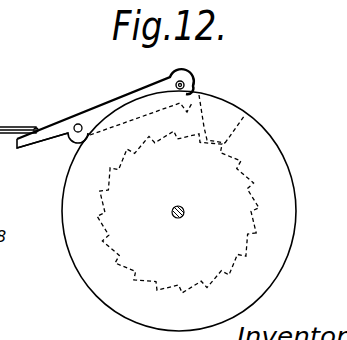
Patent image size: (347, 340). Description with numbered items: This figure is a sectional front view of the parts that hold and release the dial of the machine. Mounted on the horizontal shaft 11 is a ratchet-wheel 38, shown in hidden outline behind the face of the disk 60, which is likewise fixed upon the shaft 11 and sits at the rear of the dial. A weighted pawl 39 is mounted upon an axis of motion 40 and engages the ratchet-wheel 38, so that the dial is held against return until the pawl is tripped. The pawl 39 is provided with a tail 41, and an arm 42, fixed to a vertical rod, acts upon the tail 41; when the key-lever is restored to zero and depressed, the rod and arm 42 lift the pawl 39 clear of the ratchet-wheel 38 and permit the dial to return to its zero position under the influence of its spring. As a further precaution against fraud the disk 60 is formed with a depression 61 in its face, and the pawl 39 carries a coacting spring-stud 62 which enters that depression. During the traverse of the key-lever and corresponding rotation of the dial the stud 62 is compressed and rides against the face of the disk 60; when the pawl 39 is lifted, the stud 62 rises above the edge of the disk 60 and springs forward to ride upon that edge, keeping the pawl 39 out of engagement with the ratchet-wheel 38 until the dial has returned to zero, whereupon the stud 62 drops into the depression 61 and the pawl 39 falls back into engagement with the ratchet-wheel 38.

The horizontal shaft 11 is at (186, 212).
The ratchet-wheel 38 is at (253, 178).
The weighted pawl 39 is at (153, 85).
The axis of motion 40 is at (78, 124).
The tail 41 is at (25, 152).
The arm 42 is at (20, 126).
The disk 60 is at (241, 133).
The depression 61 is at (208, 110).
The spring-stud 62 is at (194, 88).